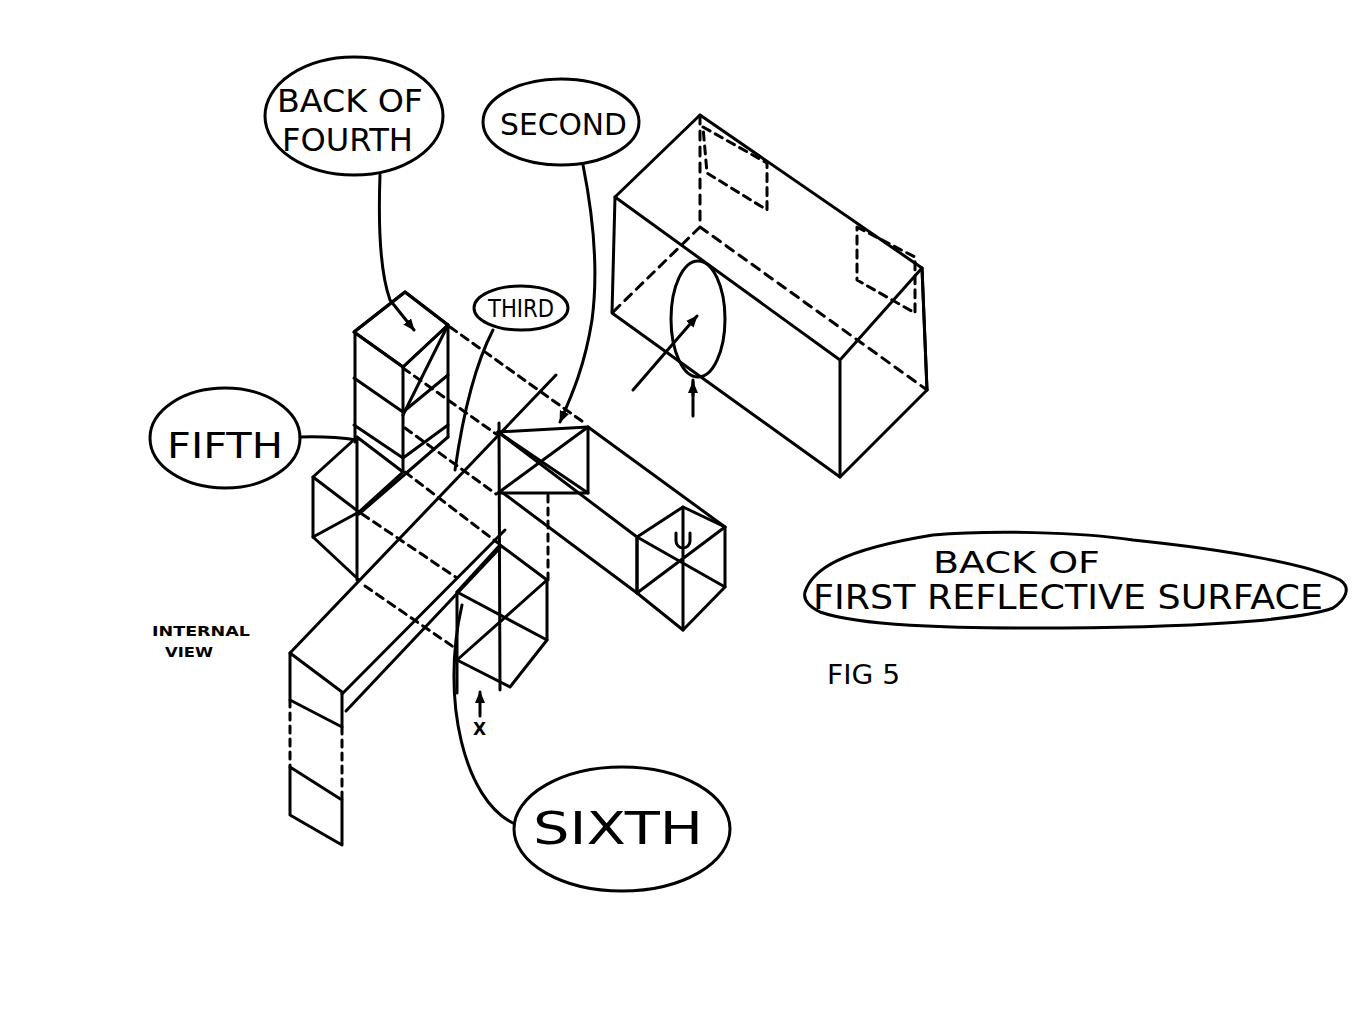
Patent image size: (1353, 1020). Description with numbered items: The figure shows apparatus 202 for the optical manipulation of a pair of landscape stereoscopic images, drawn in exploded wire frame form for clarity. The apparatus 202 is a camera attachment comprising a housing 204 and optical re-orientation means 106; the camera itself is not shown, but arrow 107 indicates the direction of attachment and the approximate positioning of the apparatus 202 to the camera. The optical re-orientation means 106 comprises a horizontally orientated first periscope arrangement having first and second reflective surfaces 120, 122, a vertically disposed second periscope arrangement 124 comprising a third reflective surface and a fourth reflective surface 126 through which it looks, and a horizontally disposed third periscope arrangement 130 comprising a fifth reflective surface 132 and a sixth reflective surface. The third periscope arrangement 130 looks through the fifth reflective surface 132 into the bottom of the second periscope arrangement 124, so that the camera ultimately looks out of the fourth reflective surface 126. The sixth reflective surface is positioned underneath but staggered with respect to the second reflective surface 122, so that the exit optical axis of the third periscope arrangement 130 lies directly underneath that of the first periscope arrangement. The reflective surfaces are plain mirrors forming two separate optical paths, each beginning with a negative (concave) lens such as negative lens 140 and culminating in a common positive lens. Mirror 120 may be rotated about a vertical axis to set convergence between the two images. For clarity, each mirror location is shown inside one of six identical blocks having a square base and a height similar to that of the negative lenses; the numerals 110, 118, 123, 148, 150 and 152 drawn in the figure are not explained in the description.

The optical re-orientation means 106 is at (670, 661).
The arrow 107 is at (647, 356).
The optical block 110 is at (628, 432).
The first recess 118 is at (752, 131).
The first reflective surface 120 is at (727, 571).
The second reflective surface 122 is at (380, 508).
The second reflective block 123 is at (550, 420).
The second periscope arrangement 124 is at (343, 314).
The fourth reflective surface 126 is at (723, 337).
The third periscope arrangement 130 is at (409, 581).
The fifth reflective surface 132 is at (494, 435).
The negative lens 140 is at (905, 245).
The lower segment 148 is at (290, 813).
The upper segment 150 is at (290, 700).
The side segment 152 is at (342, 743).
The apparatus 202 is at (862, 144).
The housing 204 is at (932, 338).